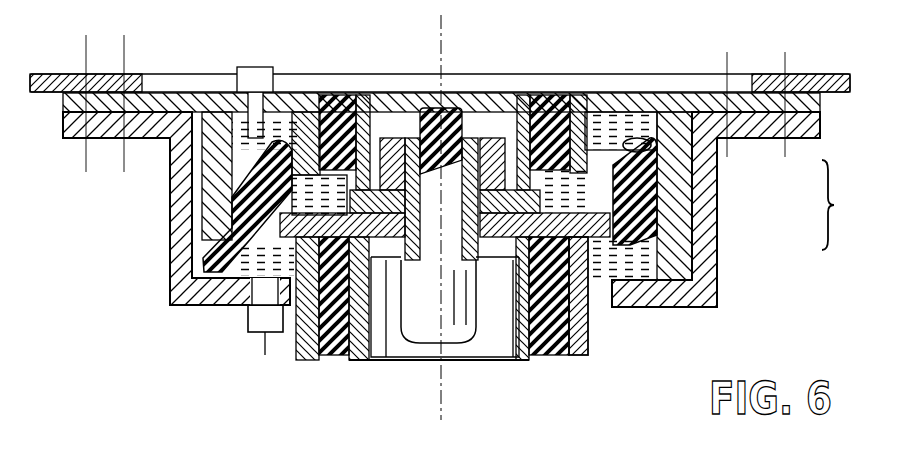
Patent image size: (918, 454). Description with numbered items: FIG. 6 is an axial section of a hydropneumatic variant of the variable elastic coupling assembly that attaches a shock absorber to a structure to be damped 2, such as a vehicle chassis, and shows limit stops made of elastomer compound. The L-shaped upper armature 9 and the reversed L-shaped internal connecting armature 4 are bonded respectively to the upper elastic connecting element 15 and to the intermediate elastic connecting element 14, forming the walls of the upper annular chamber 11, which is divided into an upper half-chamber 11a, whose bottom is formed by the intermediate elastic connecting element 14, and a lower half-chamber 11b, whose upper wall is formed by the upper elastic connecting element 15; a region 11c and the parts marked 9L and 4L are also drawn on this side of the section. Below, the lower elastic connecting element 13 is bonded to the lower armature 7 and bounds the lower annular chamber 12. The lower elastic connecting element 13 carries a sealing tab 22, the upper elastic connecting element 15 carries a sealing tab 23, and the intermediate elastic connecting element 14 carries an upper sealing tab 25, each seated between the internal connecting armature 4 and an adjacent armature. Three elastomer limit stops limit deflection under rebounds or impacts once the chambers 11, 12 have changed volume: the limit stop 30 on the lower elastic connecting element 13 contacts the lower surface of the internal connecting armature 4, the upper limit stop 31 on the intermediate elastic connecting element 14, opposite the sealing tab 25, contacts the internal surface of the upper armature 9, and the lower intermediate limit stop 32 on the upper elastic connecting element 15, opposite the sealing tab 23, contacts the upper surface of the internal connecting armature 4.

The structure to be damped 2 is at (797, 80).
The upper armature 9 is at (174, 100).
The upper right elastic member 9L is at (540, 167).
The lower armature 7 is at (212, 304).
The lower annular chamber 12 is at (654, 308).
The upper elastic connecting element 15 is at (326, 162).
The lower intermediate limit stop 32 is at (326, 178).
The sealing tab 23 is at (369, 187).
The upper sealing tab 25 is at (662, 120).
The upper limit stop 31 is at (625, 140).
The intermediate elastic connecting element 14 is at (240, 200).
The lower left lubricant chamber 4L is at (233, 248).
The limit stop 30 is at (301, 270).
The lower elastic connecting element 13 is at (338, 360).
The sealing tab 22 is at (383, 259).
The internal connecting armature 4 is at (598, 300).
The upper annular chamber 11 is at (846, 205).
The upper half-chamber 11a is at (672, 133).
The lower half-chamber 11b is at (655, 228).
The seal lip 11c is at (655, 167).